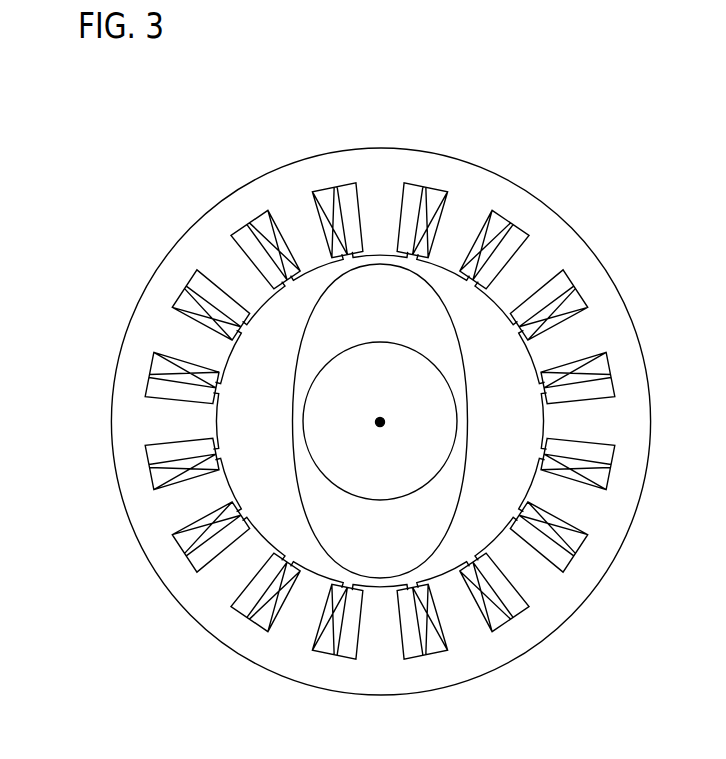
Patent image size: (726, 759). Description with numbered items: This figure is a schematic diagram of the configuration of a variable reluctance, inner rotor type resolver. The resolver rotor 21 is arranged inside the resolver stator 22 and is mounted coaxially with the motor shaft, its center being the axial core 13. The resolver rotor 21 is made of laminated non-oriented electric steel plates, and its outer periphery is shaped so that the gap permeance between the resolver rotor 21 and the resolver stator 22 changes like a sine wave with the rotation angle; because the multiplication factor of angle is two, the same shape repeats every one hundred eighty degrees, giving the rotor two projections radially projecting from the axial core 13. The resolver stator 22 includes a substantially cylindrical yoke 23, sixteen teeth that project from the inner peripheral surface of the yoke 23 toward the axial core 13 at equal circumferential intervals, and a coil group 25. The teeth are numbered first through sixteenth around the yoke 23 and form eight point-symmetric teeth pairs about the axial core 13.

The axial core 13 is at (383, 424).
The resolver rotor 21 is at (432, 318).
The resolver stator 22 is at (263, 170).
The yoke 23 is at (458, 182).
The coil group 25 is at (353, 188).